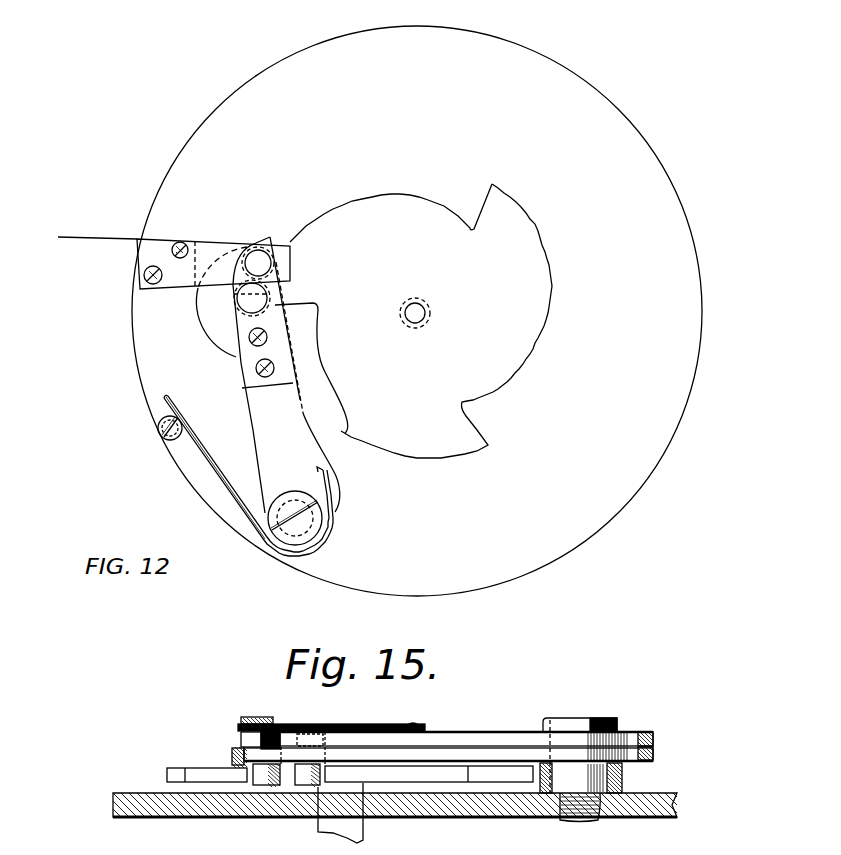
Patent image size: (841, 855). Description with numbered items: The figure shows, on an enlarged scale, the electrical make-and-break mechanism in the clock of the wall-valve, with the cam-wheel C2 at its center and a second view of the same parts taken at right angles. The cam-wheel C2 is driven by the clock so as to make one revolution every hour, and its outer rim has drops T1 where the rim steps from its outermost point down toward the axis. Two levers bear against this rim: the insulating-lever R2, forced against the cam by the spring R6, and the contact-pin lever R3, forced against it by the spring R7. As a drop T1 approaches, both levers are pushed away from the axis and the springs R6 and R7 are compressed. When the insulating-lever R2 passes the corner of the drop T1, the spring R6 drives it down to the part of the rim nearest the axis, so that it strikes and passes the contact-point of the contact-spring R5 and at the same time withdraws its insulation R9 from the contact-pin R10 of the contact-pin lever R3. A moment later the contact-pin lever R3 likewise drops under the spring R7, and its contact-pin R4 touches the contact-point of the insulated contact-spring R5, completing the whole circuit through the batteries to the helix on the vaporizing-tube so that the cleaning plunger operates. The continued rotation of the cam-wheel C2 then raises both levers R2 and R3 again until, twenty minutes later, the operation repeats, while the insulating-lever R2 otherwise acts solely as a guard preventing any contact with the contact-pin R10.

In FIG. 12, the cam-wheel C2 is at (527, 235).
In FIG. 15, the cam-wheel C2 is at (185, 770).
In FIG. 12, the drop T1 is at (483, 212).
In FIG. 12, the insulating-lever R2 is at (298, 430).
In FIG. 15, the insulating-lever R2 is at (492, 737).
In FIG. 12, the contact-pin lever R3 is at (210, 318).
In FIG. 15, the contact-pin lever R3 is at (445, 753).
In FIG. 12, the contact-pin R4 is at (286, 228).
In FIG. 12, the contact-spring R5 is at (225, 250).
In FIG. 15, the contact-spring R5 is at (267, 718).
In FIG. 12, the spring R6 is at (171, 412).
In FIG. 15, the spring R6 is at (653, 753).
In FIG. 12, the spring R7 is at (167, 403).
In FIG. 15, the spring R7 is at (653, 737).
In FIG. 12, the insulation R9 is at (237, 350).
In FIG. 15, the contact-pin R10 is at (243, 740).